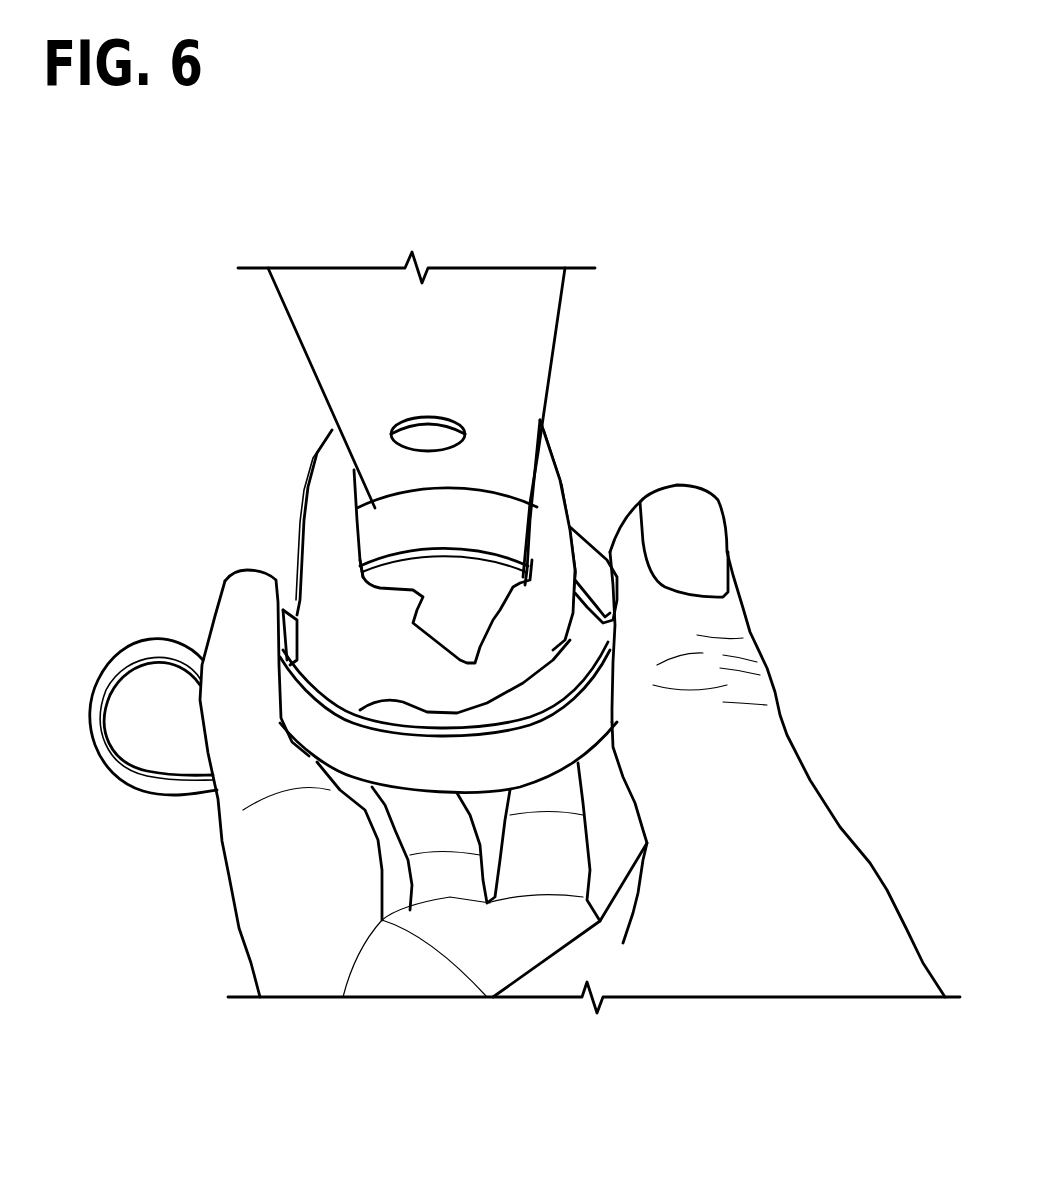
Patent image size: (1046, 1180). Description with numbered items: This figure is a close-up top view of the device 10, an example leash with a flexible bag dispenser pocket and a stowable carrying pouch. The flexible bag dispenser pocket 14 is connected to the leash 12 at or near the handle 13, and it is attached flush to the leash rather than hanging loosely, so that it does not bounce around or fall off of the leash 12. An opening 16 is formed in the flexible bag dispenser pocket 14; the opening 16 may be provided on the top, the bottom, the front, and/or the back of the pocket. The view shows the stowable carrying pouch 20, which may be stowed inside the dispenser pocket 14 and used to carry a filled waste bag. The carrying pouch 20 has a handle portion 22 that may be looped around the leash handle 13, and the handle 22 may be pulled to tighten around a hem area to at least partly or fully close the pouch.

The device 10 is at (718, 403).
The leash 12 is at (158, 647).
The handle 13 is at (555, 348).
The flexible bag dispenser pocket 14 is at (357, 757).
The opening 16 is at (467, 613).
The stowable carrying pouch 20 is at (367, 652).
The handle portion 22 is at (313, 480).